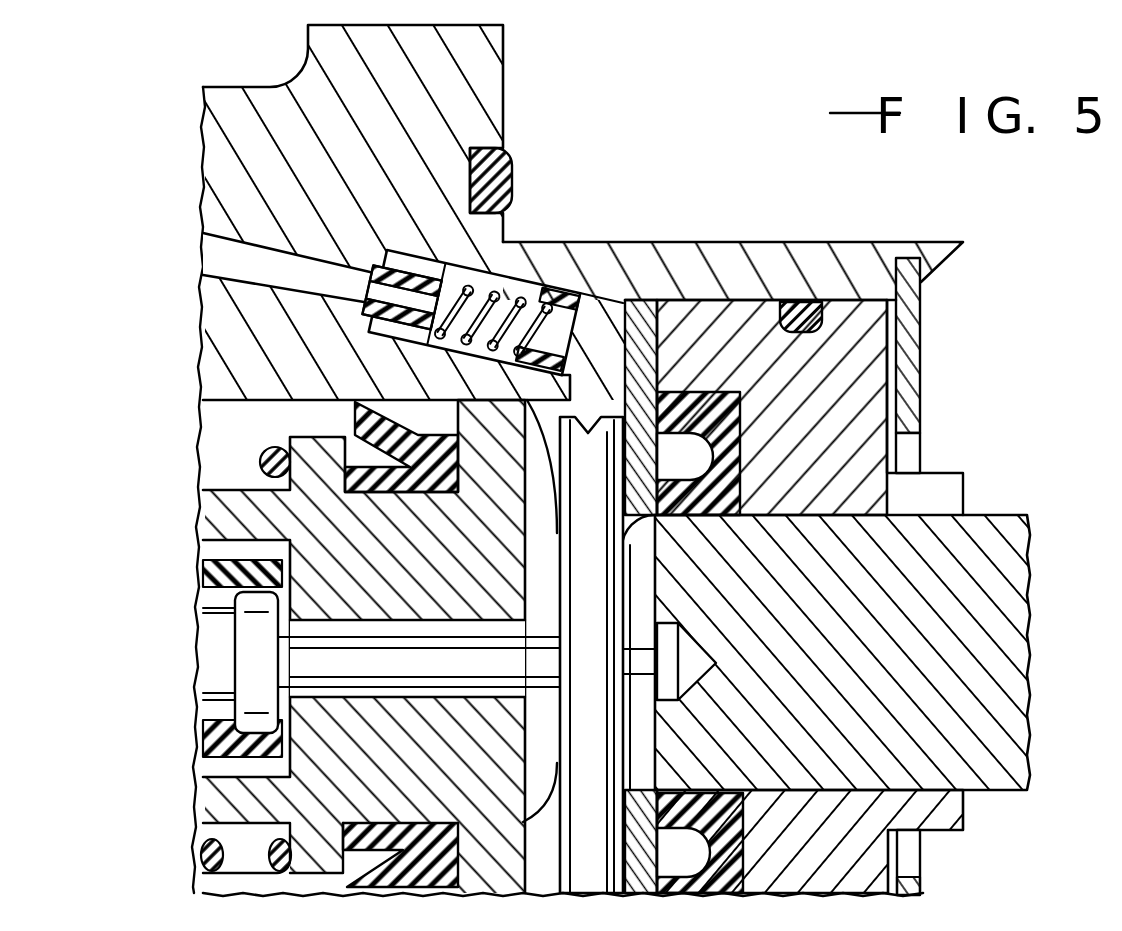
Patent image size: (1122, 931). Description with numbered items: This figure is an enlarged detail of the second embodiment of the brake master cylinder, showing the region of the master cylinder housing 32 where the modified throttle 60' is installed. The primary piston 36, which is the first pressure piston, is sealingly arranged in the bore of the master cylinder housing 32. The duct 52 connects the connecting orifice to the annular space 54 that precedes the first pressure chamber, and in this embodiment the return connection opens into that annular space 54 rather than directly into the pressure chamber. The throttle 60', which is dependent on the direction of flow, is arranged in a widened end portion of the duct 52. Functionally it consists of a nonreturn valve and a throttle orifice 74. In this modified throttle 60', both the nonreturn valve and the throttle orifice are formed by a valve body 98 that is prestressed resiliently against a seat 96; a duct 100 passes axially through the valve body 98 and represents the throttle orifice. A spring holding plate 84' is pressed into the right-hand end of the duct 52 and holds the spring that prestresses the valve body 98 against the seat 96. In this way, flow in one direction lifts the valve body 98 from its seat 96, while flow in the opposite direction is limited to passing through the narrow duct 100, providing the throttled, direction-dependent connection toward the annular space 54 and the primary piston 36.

The master cylinder housing 32 is at (273, 105).
The duct 52 is at (210, 250).
The annular space 54 is at (503, 390).
The throttle orifice 74 is at (367, 288).
The seat 96 is at (386, 262).
The valve body 98 is at (526, 264).
The duct 100 is at (378, 300).
The throttle 60' is at (766, 532).
The spring holding plate 84' is at (658, 596).
The primary piston 36 is at (232, 520).